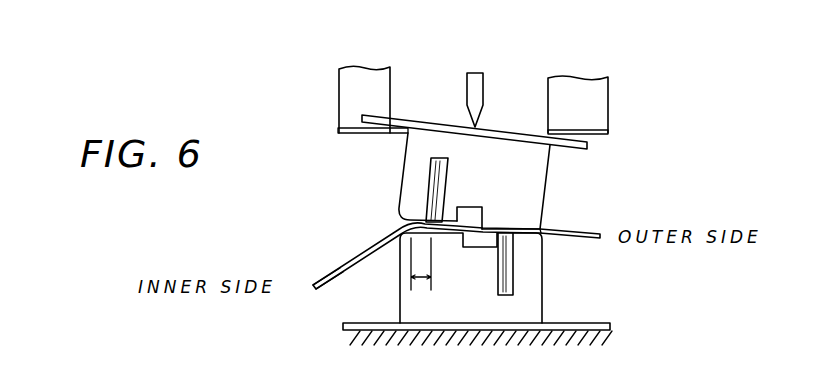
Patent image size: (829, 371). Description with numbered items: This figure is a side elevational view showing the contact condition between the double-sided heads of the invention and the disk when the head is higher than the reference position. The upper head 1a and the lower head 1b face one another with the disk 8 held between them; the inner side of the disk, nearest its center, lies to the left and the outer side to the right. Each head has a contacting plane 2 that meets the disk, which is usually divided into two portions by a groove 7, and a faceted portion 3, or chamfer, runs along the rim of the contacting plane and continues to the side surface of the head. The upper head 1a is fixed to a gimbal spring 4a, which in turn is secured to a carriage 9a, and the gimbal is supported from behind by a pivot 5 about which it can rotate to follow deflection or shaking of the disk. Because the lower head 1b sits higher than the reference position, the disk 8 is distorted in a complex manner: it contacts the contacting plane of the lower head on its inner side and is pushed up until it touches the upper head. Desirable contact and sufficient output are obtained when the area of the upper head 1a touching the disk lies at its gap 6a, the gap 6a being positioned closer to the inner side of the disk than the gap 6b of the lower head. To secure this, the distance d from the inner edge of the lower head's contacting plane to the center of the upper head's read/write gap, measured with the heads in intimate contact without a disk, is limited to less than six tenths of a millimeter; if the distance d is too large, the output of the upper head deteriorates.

The upper head 1a is at (542, 160).
The lower head 1b is at (540, 270).
The contacting plane 2 is at (503, 222).
The faceted portion 3 is at (541, 229).
The gimbal spring 4a is at (505, 127).
The pivot 5 is at (474, 75).
The gap center of upper head 6a is at (430, 188).
The gap center of lower head 6b is at (508, 285).
The groove 7 is at (478, 207).
The disk 8 is at (360, 257).
The carriage 9a is at (372, 77).
The distance d is at (421, 264).